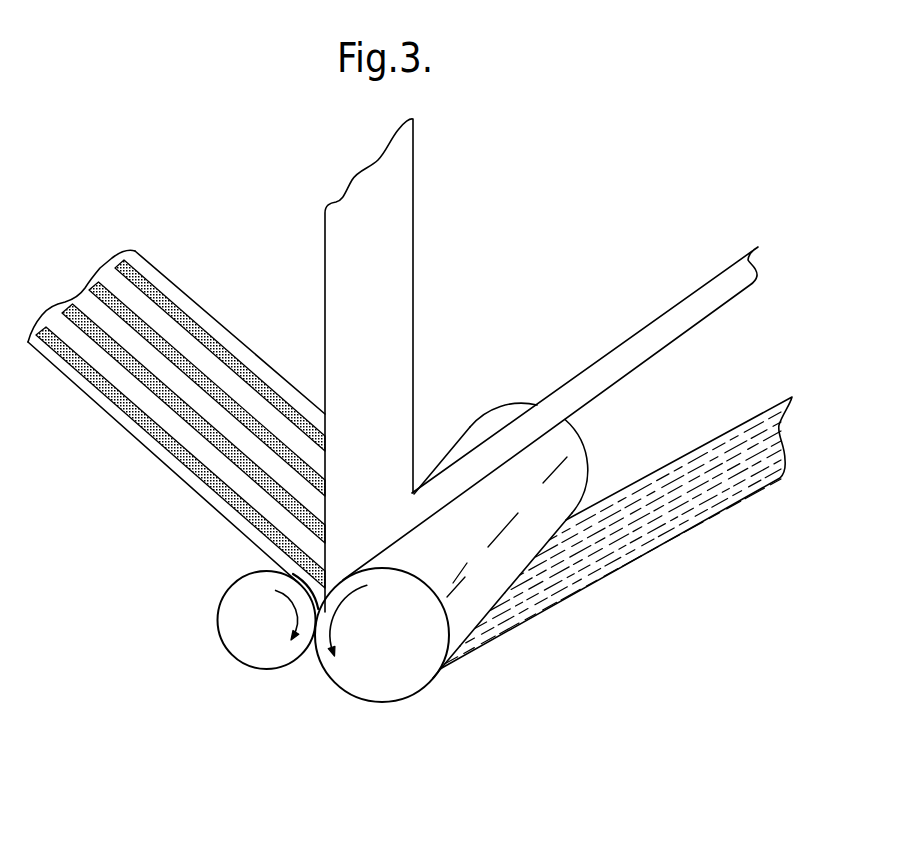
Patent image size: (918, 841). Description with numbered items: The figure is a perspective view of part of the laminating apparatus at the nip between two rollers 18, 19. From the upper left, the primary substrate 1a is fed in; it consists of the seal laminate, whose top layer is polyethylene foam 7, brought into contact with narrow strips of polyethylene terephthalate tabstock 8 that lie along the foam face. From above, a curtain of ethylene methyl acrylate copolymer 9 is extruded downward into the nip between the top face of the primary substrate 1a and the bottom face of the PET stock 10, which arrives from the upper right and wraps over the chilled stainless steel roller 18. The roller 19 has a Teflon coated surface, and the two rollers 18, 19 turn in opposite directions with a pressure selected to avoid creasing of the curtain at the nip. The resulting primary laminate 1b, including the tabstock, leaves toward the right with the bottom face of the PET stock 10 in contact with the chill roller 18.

The primary substrate 1a is at (232, 540).
The primary laminate 1b is at (683, 533).
The polyethylene foam layer 7 is at (153, 316).
The tabstock 8 is at (205, 373).
The ethylene methyl acrylate copolymer 9 is at (400, 234).
The PET stock 10 is at (708, 298).
The roller 18 is at (408, 682).
The roller 19 is at (262, 655).